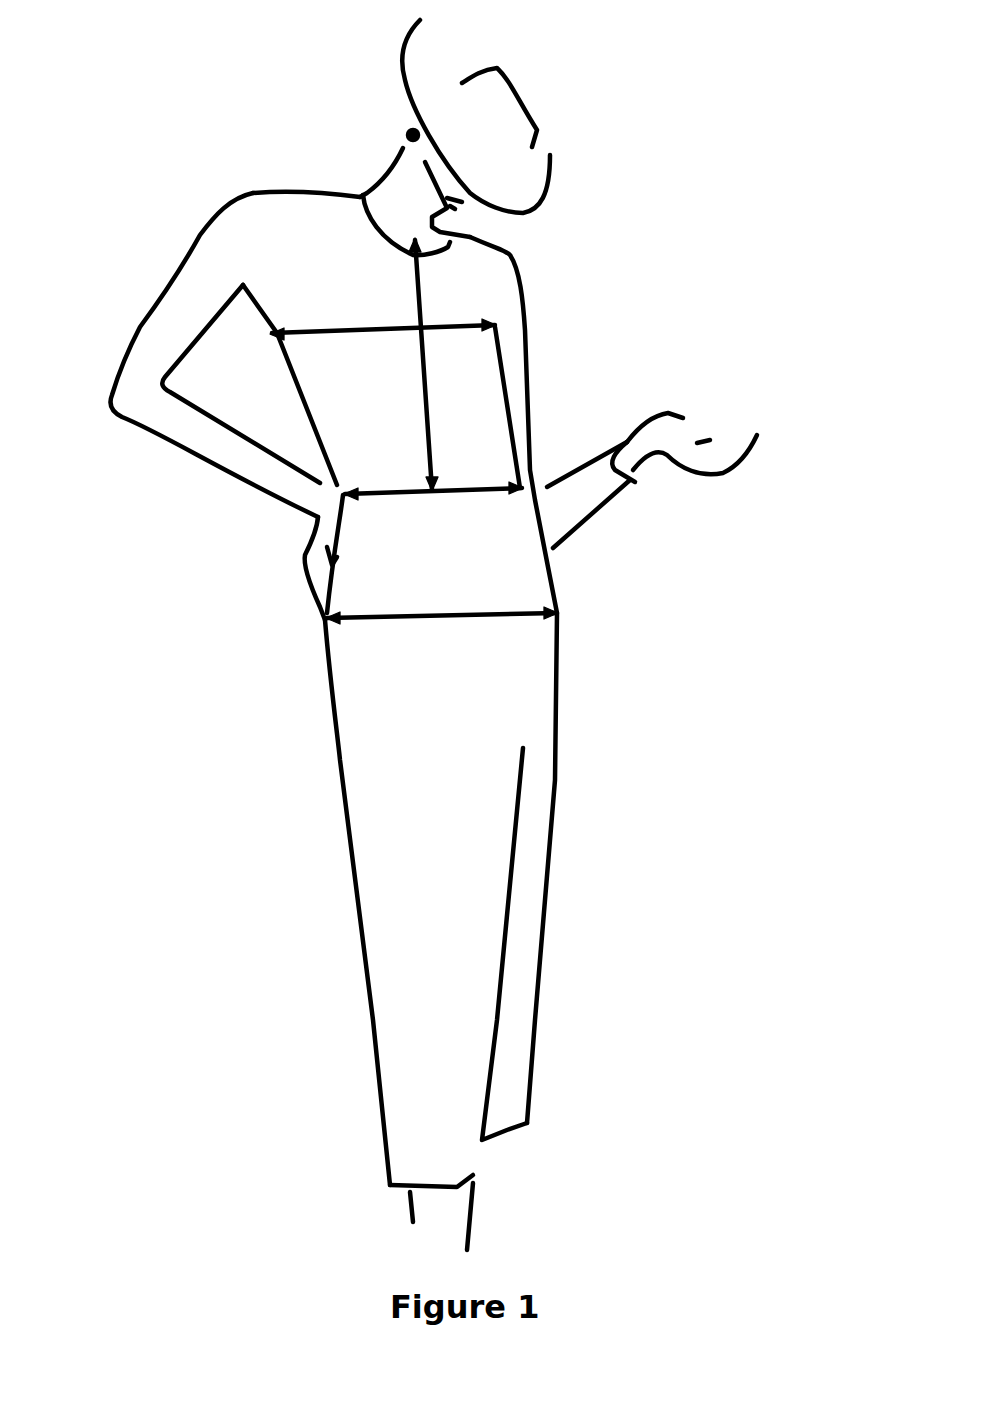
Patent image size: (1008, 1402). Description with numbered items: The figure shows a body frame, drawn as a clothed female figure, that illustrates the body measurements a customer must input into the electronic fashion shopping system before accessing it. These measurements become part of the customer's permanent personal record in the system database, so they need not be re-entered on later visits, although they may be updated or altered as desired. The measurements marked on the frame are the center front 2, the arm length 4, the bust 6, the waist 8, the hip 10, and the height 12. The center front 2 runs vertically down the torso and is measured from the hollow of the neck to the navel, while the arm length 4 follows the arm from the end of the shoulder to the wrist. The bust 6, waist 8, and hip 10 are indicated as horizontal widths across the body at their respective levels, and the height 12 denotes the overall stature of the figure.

The center front 2 is at (428, 287).
The arm length 4 is at (538, 296).
The bust 6 is at (356, 318).
The waist 8 is at (506, 506).
The hip 10 is at (501, 634).
The height 12 is at (704, 116).